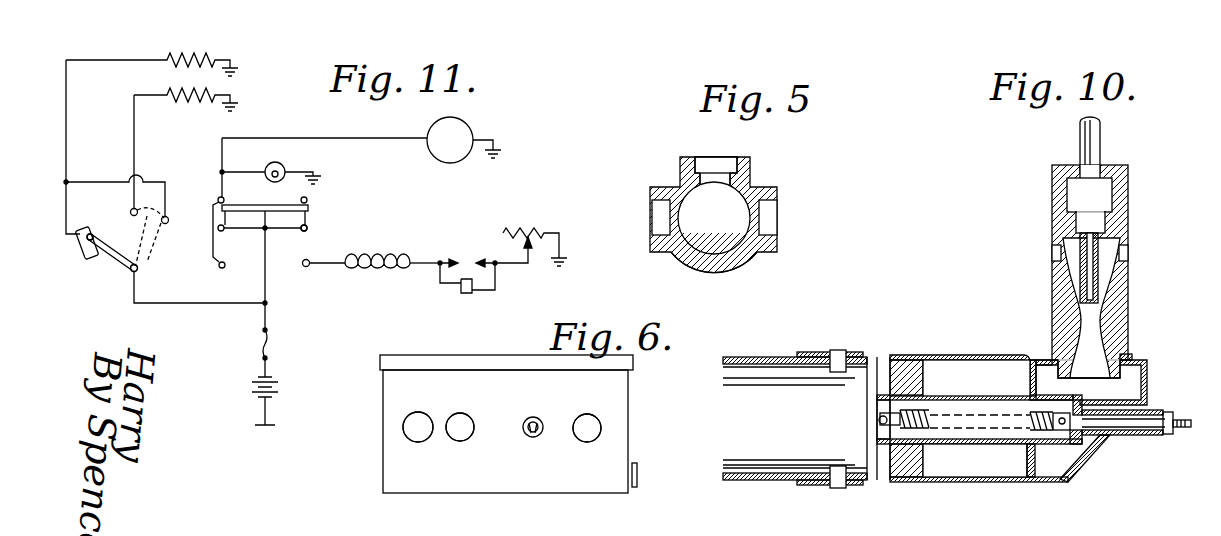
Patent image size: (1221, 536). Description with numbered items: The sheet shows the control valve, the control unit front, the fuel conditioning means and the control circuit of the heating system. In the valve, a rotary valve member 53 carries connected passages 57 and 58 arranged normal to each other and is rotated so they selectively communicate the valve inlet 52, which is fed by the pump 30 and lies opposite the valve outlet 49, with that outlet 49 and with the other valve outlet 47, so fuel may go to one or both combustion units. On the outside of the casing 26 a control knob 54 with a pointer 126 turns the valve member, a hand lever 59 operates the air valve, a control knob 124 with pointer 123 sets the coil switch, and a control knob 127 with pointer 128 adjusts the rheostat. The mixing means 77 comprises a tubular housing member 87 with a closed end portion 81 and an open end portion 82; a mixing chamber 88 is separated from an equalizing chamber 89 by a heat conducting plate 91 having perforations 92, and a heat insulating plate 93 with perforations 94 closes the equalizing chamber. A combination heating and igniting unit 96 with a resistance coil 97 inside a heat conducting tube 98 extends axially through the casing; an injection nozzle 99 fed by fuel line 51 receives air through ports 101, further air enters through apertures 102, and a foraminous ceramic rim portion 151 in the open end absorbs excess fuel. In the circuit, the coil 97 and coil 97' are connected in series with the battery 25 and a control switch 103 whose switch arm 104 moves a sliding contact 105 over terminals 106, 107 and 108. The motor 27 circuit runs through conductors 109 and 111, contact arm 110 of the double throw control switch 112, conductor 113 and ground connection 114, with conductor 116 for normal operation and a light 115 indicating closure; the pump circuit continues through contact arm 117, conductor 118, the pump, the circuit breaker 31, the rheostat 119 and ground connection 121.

In FIG. 11, the resistance coil 97 is at (176, 59).
In FIG. 10, the resistance coil 97 is at (951, 419).
In FIG. 11, the resistance coil 97' is at (212, 94).
In FIG. 11, the terminal 107 is at (137, 208).
In FIG. 11, the terminal 108 is at (186, 203).
In FIG. 11, the control switch 103 is at (151, 271).
In FIG. 11, the switch arm 104 is at (122, 262).
In FIG. 11, the sliding contact 105 is at (78, 258).
In FIG. 11, the terminal 106 is at (90, 231).
In FIG. 11, the conductor 111 is at (276, 285).
In FIG. 11, the conductor 109 is at (266, 322).
In FIG. 11, the battery 25 is at (257, 381).
In FIG. 11, the conductor 113 is at (306, 137).
In FIG. 11, the light 115 is at (285, 166).
In FIG. 11, the motor 27 is at (462, 132).
In FIG. 11, the ground connection 114 is at (497, 149).
In FIG. 11, the contact arm 110 is at (229, 220).
In FIG. 11, the control switch 112 is at (336, 204).
In FIG. 6, the control switch 112 is at (541, 427).
In FIG. 11, the conductor 116 is at (237, 235).
In FIG. 11, the contact arm 117 is at (310, 217).
In FIG. 11, the conductor 118 is at (324, 264).
In FIG. 11, the pump 30 is at (405, 242).
In FIG. 11, the circuit breaker 31 is at (453, 282).
In FIG. 11, the rheostat 119 is at (531, 260).
In FIG. 11, the ground connection 121 is at (560, 242).
In FIG. 5, the valve outlet 47 is at (720, 162).
In FIG. 5, the passage 57 is at (718, 187).
In FIG. 5, the valve outlet 49 is at (650, 205).
In FIG. 5, the valve inlet 52 is at (772, 213).
In FIG. 5, the rotary valve member 53 is at (713, 252).
In FIG. 5, the passage 58 is at (736, 230).
In FIG. 6, the casing 26 is at (628, 393).
In FIG. 6, the pointer 128 is at (402, 427).
In FIG. 6, the control knob 127 is at (413, 432).
In FIG. 6, the pointer 123 is at (462, 440).
In FIG. 6, the control knob 124 is at (458, 435).
In FIG. 6, the control knob 54 is at (597, 434).
In FIG. 6, the pointer 126 is at (590, 441).
In FIG. 6, the hand lever 59 is at (640, 473).
In FIG. 10, the fuel line 51 is at (1101, 138).
In FIG. 10, the injection nozzle 99 is at (1136, 204).
In FIG. 10, the ports 101 is at (1128, 254).
In FIG. 10, the apertures 102 is at (1132, 358).
In FIG. 10, the mixing chamber 88 is at (1130, 405).
In FIG. 10, the rim portion 151 is at (763, 357).
In FIG. 10, the open end portion 82 is at (804, 357).
In FIG. 10, the perforations 94 is at (906, 372).
In FIG. 10, the air and fuel mixing means 77 is at (939, 347).
In FIG. 10, the heat insulating plate 93 is at (934, 382).
In FIG. 10, the perforations 92 is at (1037, 362).
In FIG. 10, the equalizing chamber 89 is at (990, 392).
In FIG. 10, the heat conducting tube 98 is at (1005, 470).
In FIG. 10, the combination heating and igniting unit 96 is at (960, 455).
In FIG. 10, the housing member 87 is at (985, 483).
In FIG. 10, the heat conducting plate 91 is at (1036, 458).
In FIG. 10, the closed end portion 81 is at (1080, 464).